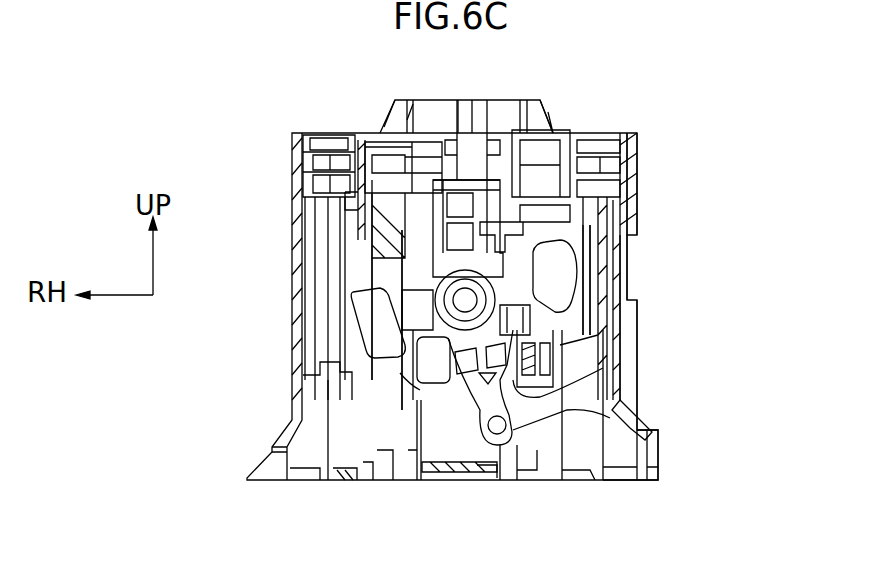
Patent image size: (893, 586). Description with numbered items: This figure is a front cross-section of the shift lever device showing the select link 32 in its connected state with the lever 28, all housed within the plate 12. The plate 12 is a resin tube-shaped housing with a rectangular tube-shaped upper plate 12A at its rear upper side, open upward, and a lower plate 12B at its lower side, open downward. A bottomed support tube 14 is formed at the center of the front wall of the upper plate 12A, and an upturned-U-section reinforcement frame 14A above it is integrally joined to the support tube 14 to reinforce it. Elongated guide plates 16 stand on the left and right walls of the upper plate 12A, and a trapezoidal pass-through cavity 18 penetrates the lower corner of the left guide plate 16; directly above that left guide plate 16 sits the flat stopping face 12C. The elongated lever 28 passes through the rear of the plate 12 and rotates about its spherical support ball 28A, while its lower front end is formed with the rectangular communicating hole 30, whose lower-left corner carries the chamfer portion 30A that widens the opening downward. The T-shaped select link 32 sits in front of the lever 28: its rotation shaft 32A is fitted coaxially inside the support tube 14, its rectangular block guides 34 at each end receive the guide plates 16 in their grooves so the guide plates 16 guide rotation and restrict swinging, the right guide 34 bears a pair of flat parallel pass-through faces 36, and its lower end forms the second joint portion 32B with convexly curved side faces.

The plate 12 is at (293, 163).
The upper plate 12A is at (640, 163).
The lower plate 12B is at (660, 457).
The stopping face 12C is at (627, 240).
The support tube 14 is at (425, 303).
The reinforcement frame 14A is at (437, 250).
The guide plates 16 is at (355, 262).
The pass-through cavity 18 is at (598, 347).
The lever 28 is at (380, 114).
The support ball 28A is at (548, 112).
The communicating hole 30 is at (460, 398).
The chamfer portion 30A is at (603, 368).
The select link 32 is at (476, 405).
The rotation shaft 32A is at (415, 362).
The second joint portion 32B is at (632, 420).
The guides 34 is at (352, 335).
The pass-through faces 36 is at (383, 280).